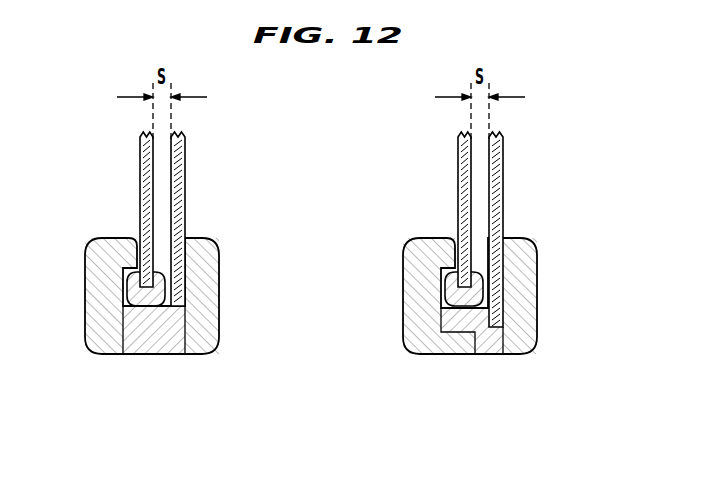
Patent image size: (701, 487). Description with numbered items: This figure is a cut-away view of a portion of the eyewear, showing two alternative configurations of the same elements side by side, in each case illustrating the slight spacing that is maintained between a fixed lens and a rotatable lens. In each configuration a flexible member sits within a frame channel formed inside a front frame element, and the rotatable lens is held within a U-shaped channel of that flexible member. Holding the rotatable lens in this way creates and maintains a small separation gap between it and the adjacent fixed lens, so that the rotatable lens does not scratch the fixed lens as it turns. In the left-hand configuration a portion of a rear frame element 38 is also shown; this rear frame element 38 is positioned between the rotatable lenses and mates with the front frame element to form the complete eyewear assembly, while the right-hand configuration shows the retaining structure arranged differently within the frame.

The rear frame element 38 is at (85, 298).